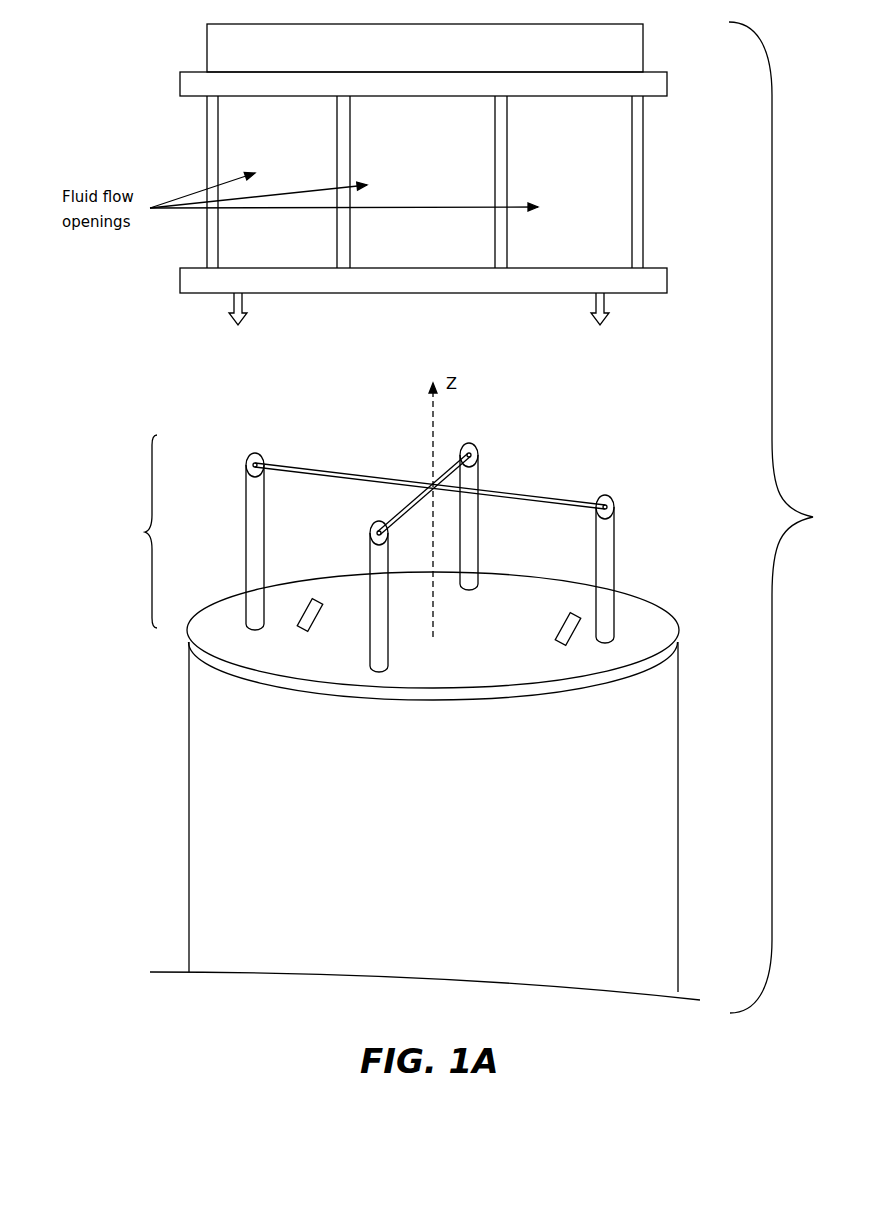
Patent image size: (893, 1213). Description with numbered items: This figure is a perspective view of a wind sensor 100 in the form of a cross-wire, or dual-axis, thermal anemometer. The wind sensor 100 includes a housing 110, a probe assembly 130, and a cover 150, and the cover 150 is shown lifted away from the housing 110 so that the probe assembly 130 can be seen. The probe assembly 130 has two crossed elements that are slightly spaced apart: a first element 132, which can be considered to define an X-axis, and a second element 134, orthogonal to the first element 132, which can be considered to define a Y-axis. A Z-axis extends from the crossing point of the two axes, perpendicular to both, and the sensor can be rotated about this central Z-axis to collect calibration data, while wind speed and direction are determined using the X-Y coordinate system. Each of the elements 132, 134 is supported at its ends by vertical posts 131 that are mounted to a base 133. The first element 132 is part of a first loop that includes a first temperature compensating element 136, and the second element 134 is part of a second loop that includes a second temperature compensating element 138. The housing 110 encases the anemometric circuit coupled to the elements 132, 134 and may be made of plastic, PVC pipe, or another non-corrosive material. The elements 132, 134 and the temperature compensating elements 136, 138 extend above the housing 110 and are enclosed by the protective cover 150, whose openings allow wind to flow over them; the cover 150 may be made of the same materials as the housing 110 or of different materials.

The wind sensor 100 is at (790, 517).
The housing 110 is at (254, 868).
The probe assembly 130 is at (126, 531).
The vertical posts 131 is at (253, 510).
The first element 132 is at (397, 503).
The base 133 is at (504, 663).
The second element 134 is at (563, 482).
The first temperature compensating element 136 is at (300, 618).
The second temperature compensating element 138 is at (575, 638).
The cover 150 is at (165, 80).